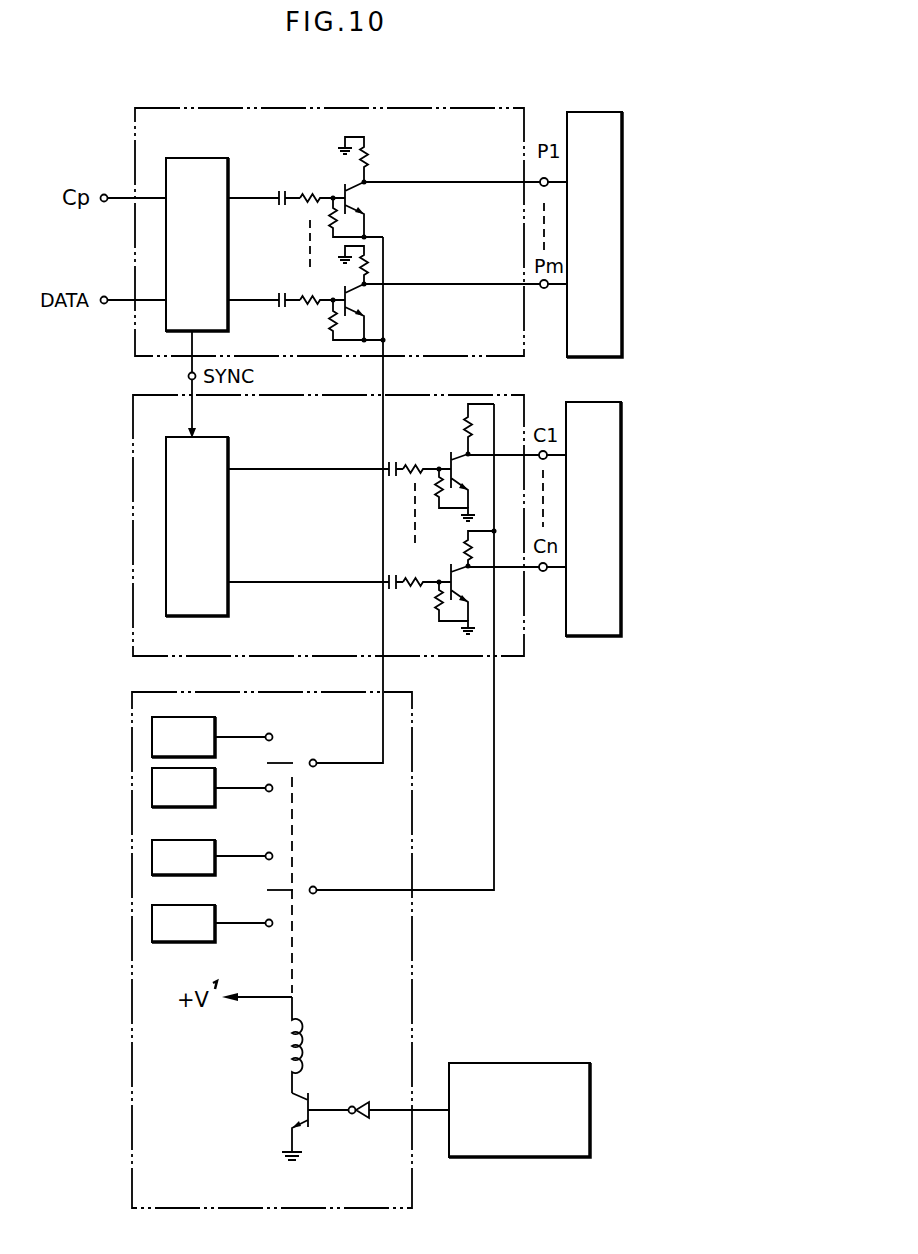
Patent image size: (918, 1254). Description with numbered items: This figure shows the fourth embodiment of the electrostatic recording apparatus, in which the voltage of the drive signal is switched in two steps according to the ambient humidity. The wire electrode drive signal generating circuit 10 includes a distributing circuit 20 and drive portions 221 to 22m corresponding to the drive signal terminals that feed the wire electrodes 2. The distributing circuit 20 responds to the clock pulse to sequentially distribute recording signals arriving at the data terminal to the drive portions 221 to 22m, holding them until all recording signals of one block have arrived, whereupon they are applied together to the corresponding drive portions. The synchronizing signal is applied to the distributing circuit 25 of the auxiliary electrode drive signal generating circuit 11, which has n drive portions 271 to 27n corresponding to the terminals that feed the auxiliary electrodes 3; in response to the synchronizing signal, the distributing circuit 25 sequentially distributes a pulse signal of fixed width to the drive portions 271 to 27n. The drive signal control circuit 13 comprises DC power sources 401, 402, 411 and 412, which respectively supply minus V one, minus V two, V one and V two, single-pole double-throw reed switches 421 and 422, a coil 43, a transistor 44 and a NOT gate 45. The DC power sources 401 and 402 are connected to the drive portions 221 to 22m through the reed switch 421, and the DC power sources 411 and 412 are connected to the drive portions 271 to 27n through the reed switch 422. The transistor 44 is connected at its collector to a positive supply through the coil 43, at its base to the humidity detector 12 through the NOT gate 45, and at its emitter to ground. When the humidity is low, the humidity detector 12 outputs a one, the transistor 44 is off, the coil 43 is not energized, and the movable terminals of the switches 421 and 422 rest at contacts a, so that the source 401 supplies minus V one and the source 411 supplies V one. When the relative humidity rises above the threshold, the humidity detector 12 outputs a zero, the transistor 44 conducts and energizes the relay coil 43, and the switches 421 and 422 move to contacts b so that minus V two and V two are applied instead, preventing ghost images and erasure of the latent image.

The wire electrodes 2 is at (598, 110).
The auxiliary electrode rows 3 is at (583, 402).
The wire electrode drive signal generating circuit 10 is at (460, 113).
The auxiliary electrode drive signal generating circuit 11 is at (333, 512).
The humidity detector 12 is at (515, 1063).
The drive signal control circuit 13 is at (412, 797).
The distributing circuit 20 is at (228, 183).
The drive portion 221 is at (331, 193).
The drive portion 22m is at (340, 296).
The distributing circuit 25 is at (236, 430).
The drive portion 271 is at (437, 455).
The drive portion 27n is at (455, 559).
The DC power source 401 is at (215, 728).
The DC power source 402 is at (215, 779).
The DC power source 411 is at (215, 843).
The DC power source 412 is at (215, 914).
The reed switch 421 is at (296, 760).
The reed switch 422 is at (300, 888).
The coil 43 is at (298, 1050).
The transistor 44 is at (309, 1103).
The NOT gate 45 is at (363, 1103).